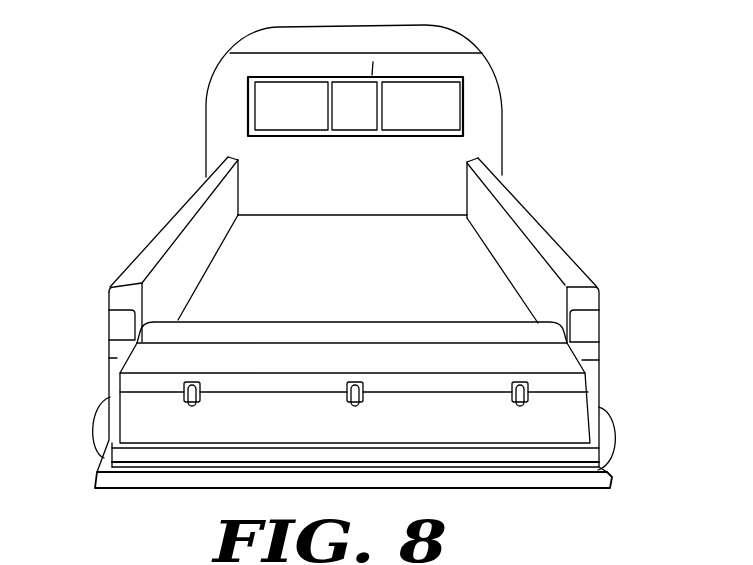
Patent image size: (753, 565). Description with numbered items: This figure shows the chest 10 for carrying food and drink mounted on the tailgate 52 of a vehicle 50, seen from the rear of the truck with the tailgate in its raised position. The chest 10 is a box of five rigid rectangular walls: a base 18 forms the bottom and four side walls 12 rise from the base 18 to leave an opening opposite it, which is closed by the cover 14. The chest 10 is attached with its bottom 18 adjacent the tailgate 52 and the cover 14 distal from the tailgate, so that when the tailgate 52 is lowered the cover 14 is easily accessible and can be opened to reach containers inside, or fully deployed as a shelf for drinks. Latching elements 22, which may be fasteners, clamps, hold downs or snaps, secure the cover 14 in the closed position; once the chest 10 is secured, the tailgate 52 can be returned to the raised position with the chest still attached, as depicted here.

The chest 10 is at (596, 380).
The side walls 12 is at (463, 429).
The cover 14 is at (412, 350).
The base 18 is at (586, 457).
The latching elements 22 is at (200, 397).
The vehicle 50 is at (433, 33).
The tailgate 52 is at (96, 473).